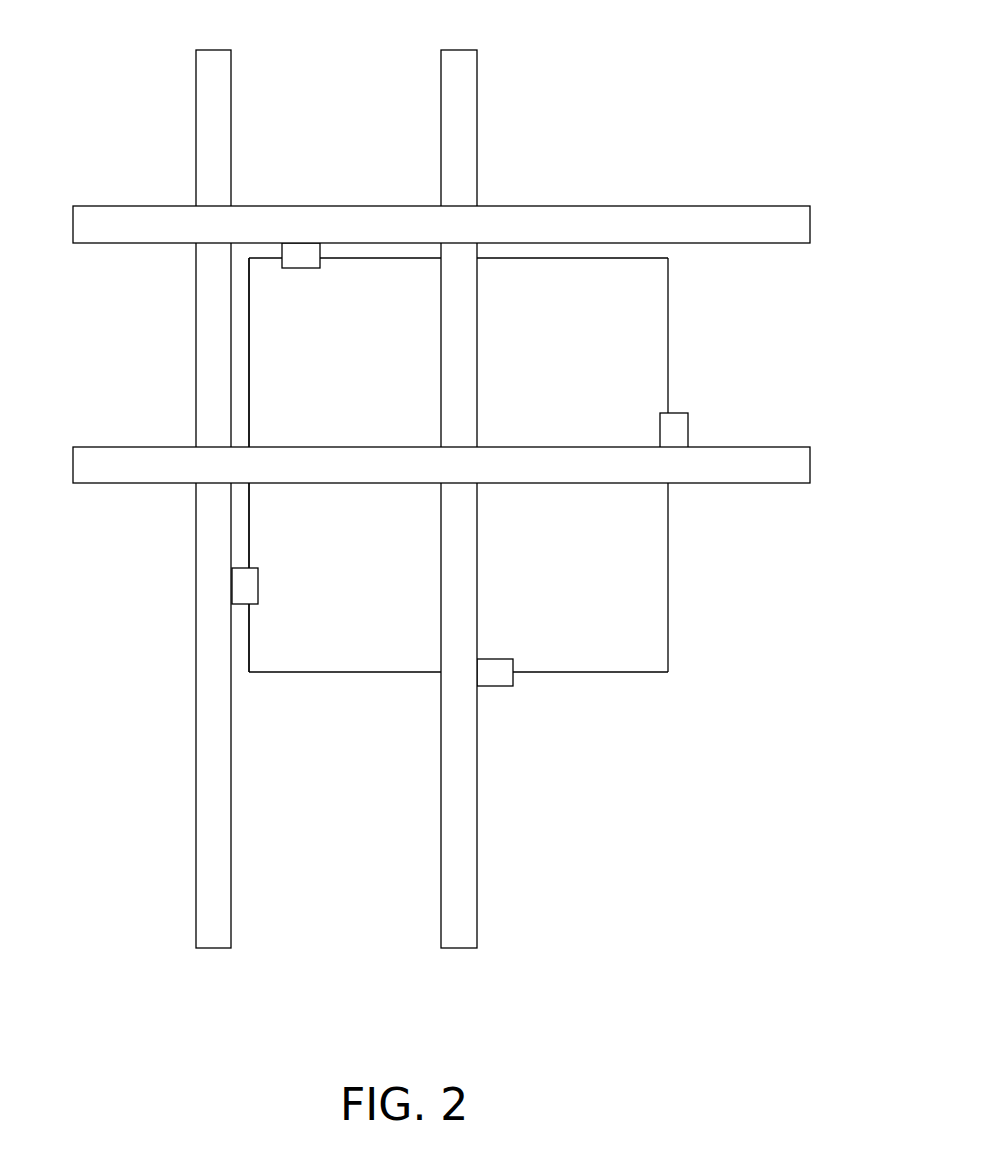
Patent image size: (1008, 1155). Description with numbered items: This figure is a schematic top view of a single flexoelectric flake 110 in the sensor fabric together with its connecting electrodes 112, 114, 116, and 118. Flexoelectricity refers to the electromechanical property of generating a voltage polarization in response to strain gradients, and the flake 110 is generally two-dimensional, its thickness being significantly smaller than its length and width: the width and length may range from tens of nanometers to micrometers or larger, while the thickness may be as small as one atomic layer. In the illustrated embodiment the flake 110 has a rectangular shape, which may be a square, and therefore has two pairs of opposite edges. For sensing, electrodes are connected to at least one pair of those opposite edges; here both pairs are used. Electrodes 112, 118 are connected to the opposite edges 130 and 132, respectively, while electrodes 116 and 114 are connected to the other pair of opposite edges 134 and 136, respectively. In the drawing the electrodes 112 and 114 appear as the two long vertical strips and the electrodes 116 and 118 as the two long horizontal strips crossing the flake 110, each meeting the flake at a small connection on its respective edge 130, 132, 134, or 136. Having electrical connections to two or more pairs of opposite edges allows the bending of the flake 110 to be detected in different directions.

The flexoelectric flake 110 is at (598, 622).
The electrode 112 is at (212, 110).
The electrode 114 is at (475, 90).
The electrode 116 is at (703, 225).
The electrode 118 is at (745, 465).
The edge 130 is at (248, 388).
The edge 132 is at (668, 306).
The edge 134 is at (528, 258).
The edge 136 is at (391, 673).